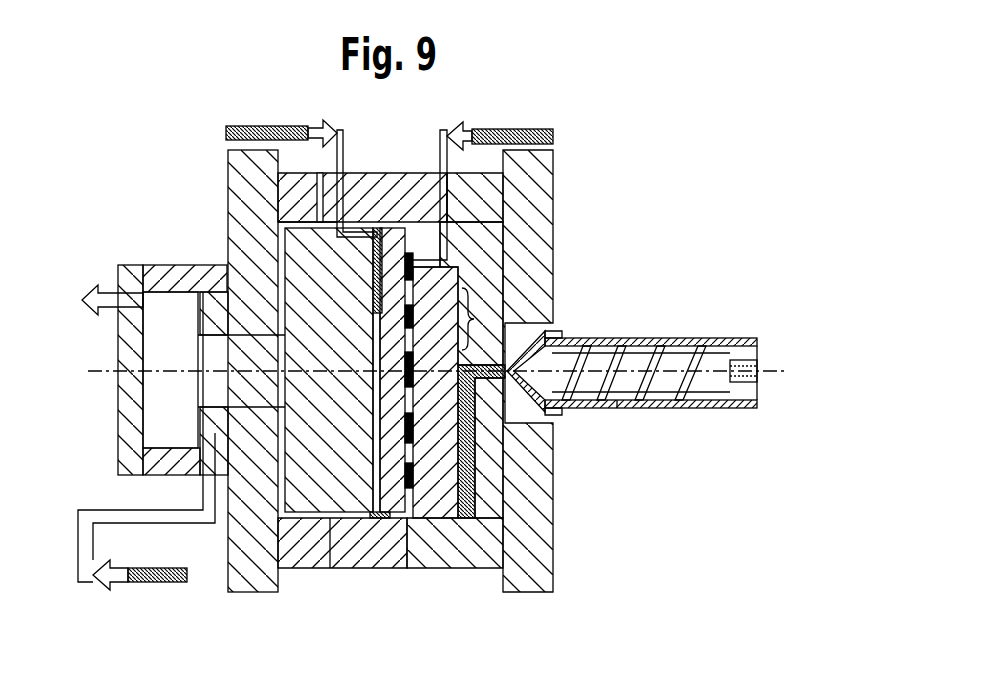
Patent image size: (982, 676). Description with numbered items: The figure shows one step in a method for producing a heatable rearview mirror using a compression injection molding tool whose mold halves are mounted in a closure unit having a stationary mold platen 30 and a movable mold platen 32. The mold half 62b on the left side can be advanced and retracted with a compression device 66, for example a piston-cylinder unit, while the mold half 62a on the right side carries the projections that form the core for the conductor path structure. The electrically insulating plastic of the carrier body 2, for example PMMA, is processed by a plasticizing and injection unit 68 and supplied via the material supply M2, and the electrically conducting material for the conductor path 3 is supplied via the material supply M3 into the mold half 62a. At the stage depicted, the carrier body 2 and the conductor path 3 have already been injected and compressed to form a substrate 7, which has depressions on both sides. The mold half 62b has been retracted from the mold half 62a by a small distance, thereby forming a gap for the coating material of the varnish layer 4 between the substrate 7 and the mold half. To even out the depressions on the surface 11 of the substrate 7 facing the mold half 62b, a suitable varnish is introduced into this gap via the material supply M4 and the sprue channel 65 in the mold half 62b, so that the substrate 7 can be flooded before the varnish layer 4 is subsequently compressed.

The carrier body 2 is at (398, 347).
The conductor path 3 is at (408, 319).
The varnish layer 4 is at (373, 295).
The substrate 7 is at (477, 319).
The surface of the substrate 11 is at (376, 424).
The stationary mold platen 30 is at (542, 189).
The movable mold platen 32 is at (250, 176).
The mold half 62a is at (495, 512).
The mold half 62b is at (320, 500).
The sprue channel 65 is at (366, 233).
The compression device 66 is at (137, 255).
The plasticizing and injection unit 68 is at (674, 332).
The material supply M2 is at (618, 408).
The material supply M3 is at (487, 150).
The material supply M4 is at (300, 126).